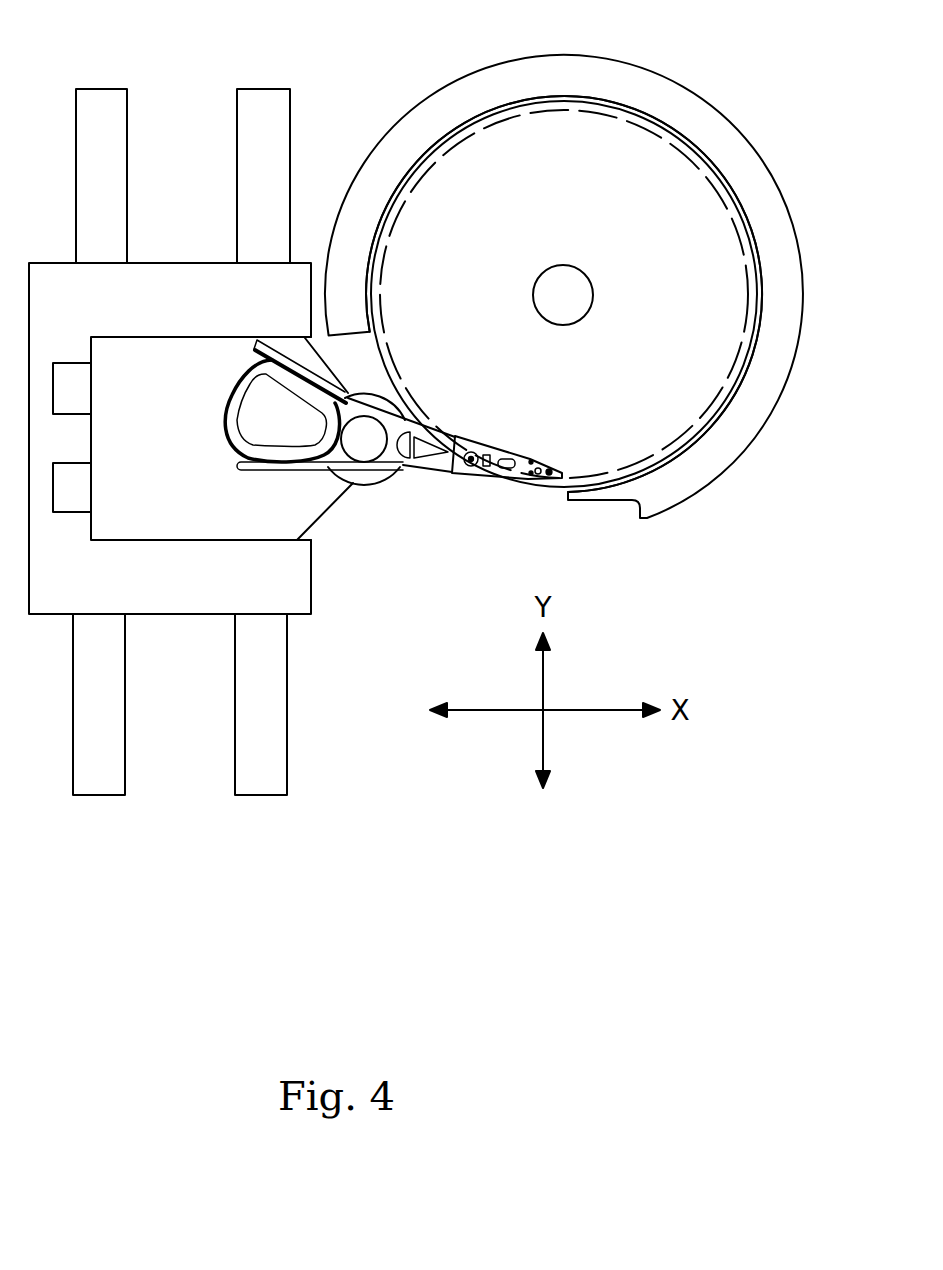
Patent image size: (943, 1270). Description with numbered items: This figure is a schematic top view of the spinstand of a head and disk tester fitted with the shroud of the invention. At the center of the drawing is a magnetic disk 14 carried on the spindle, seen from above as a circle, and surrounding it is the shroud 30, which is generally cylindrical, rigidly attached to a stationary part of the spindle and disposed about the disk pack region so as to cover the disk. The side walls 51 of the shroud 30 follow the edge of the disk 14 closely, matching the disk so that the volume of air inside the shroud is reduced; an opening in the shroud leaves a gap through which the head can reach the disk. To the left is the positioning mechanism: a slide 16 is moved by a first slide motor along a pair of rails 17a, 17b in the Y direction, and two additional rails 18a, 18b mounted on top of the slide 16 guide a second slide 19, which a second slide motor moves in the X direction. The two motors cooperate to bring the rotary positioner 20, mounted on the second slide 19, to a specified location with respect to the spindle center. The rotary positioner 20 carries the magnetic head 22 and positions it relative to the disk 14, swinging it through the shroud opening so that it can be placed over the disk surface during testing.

The magnetic disk 14 is at (460, 180).
The slide 16 is at (160, 293).
The rail 17a is at (102, 703).
The rail 17b is at (270, 703).
The rail 18a is at (70, 495).
The rail 18b is at (69, 383).
The second slide 19 is at (270, 515).
The rotary positioner 20 is at (365, 476).
The magnetic head 22 is at (542, 480).
The shroud 30 is at (673, 482).
The side wall 51 is at (663, 125).